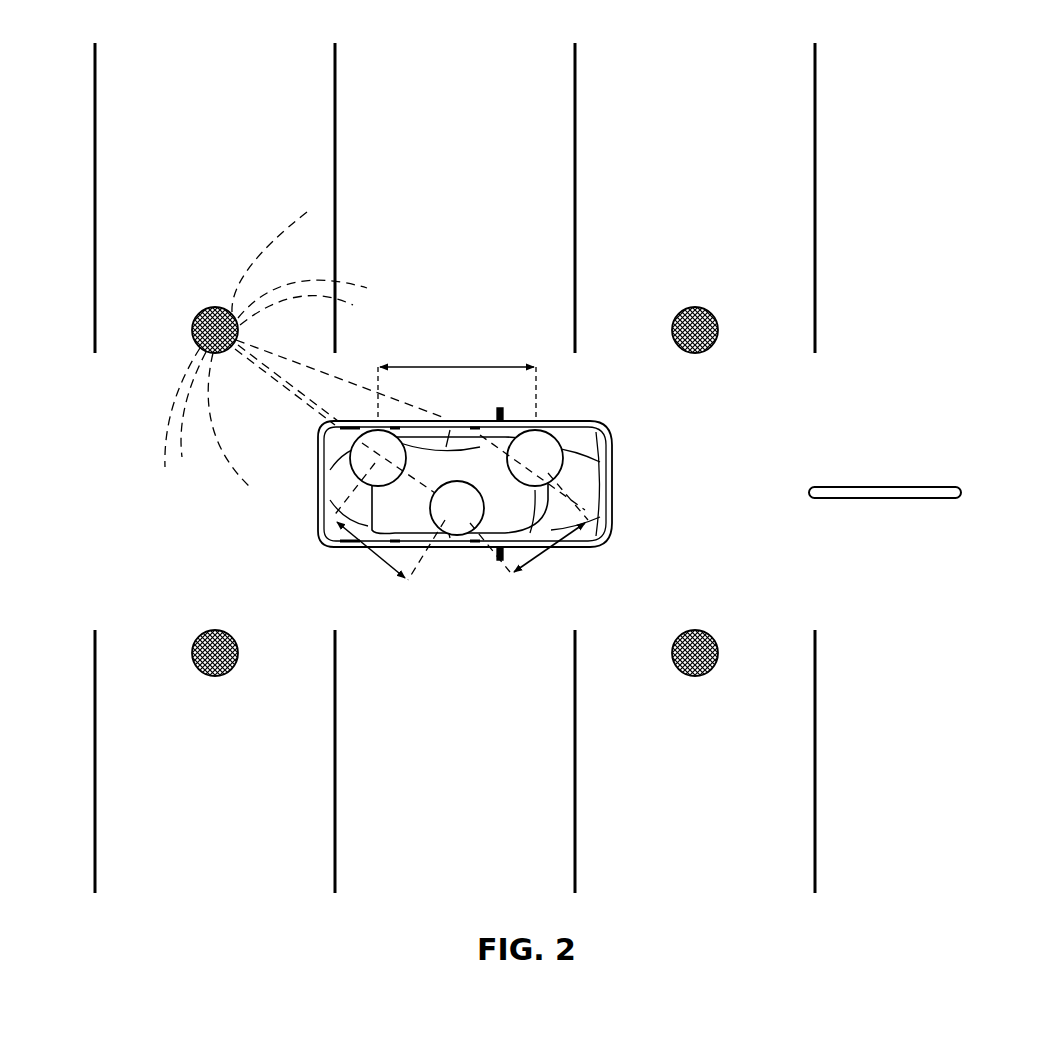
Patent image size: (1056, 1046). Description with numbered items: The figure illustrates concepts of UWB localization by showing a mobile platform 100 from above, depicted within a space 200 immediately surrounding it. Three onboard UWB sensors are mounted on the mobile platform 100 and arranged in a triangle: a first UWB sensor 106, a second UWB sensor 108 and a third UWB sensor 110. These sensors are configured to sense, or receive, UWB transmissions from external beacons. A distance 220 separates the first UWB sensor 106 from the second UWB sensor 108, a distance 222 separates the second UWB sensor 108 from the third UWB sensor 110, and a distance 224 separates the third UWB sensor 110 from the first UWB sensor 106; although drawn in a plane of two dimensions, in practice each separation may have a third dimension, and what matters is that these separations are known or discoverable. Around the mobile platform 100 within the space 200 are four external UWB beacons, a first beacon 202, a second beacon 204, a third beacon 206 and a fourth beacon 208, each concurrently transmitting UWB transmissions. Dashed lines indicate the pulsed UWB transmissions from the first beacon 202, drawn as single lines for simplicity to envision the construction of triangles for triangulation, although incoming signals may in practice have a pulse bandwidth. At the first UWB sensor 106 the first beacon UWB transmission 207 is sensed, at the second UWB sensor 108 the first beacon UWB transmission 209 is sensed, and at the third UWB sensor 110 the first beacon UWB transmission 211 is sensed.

The mobile platform 100 is at (606, 512).
The first UWB sensor 106 is at (356, 468).
The second UWB sensor 108 is at (462, 538).
The third UWB sensor 110 is at (548, 428).
The space 200 is at (968, 80).
The first beacon 202 is at (220, 308).
The second beacon 204 is at (697, 307).
The third beacon 206 is at (218, 676).
The fourth beacon 208 is at (698, 676).
The first beacon UWB transmission 207 is at (303, 398).
The first beacon UWB transmission 209 is at (331, 414).
The first beacon UWB transmission 211 is at (347, 381).
The distance 220 is at (380, 560).
The distance 222 is at (535, 560).
The distance 224 is at (458, 365).